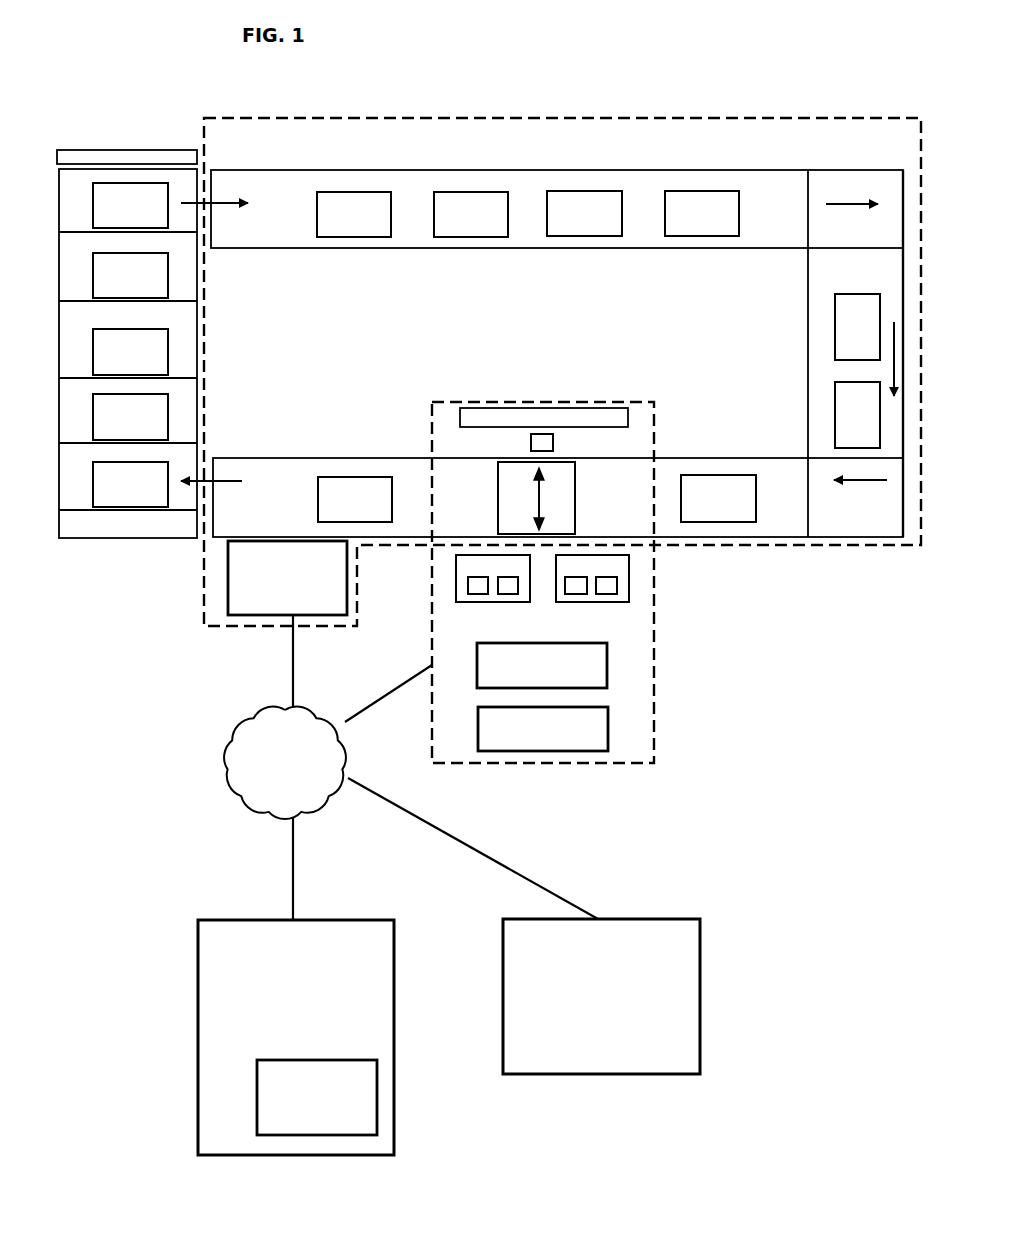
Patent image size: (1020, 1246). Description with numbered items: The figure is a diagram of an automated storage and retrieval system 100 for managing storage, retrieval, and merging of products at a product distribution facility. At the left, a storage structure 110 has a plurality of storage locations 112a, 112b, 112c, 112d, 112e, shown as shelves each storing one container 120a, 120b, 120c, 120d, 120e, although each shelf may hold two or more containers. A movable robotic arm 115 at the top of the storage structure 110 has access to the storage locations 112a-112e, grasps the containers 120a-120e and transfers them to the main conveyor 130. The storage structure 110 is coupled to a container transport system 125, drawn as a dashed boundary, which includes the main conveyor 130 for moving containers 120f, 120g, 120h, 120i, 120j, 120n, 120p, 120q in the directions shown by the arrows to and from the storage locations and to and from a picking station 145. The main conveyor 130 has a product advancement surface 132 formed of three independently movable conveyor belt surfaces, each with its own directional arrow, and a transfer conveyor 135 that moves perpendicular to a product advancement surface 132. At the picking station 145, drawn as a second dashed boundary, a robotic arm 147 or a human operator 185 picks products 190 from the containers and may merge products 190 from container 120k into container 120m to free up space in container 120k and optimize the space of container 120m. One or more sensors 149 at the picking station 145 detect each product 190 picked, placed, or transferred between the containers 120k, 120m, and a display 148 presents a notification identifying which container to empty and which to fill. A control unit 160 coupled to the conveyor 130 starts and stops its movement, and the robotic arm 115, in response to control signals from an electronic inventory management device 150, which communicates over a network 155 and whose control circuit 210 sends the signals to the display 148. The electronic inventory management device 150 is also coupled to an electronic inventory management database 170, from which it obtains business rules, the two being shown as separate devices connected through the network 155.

The automated storage and retrieval system 100 is at (645, 84).
The storage structure 110 is at (101, 384).
The storage location 112a is at (75, 232).
The storage location 112b is at (75, 301).
The storage location 112c is at (75, 378).
The storage location 112d is at (75, 443).
The storage location 112e is at (75, 512).
The movable robotic arm 115 is at (128, 150).
The container 120a is at (168, 490).
The container 120b is at (168, 432).
The container 120c is at (168, 363).
The container 120d is at (168, 290).
The container 120e is at (93, 197).
The container 120f is at (353, 192).
The container 120g is at (470, 192).
The container 120h is at (583, 191).
The container 120i is at (700, 191).
The container 120j is at (700, 475).
The container 120k is at (629, 592).
The container 120m is at (456, 585).
The container 120n is at (338, 477).
The container 120p is at (835, 338).
The container 120q is at (835, 420).
The container transport system 125 is at (733, 117).
The main conveyor 130 is at (542, 330).
The product advancement surface 132 is at (557, 353).
The transfer conveyor 135 is at (575, 497).
The picking station 145 is at (612, 763).
The robotic arm 147 is at (485, 408).
The display 148 is at (608, 678).
The sensor 149 is at (531, 441).
The electronic inventory management device 150 is at (276, 1037).
The network 155 is at (218, 763).
The control unit 160 is at (255, 616).
The electronic inventory management database 170 is at (676, 919).
The human operator 185 is at (608, 730).
The product 190 is at (611, 596).
The control circuit 210 is at (257, 1080).